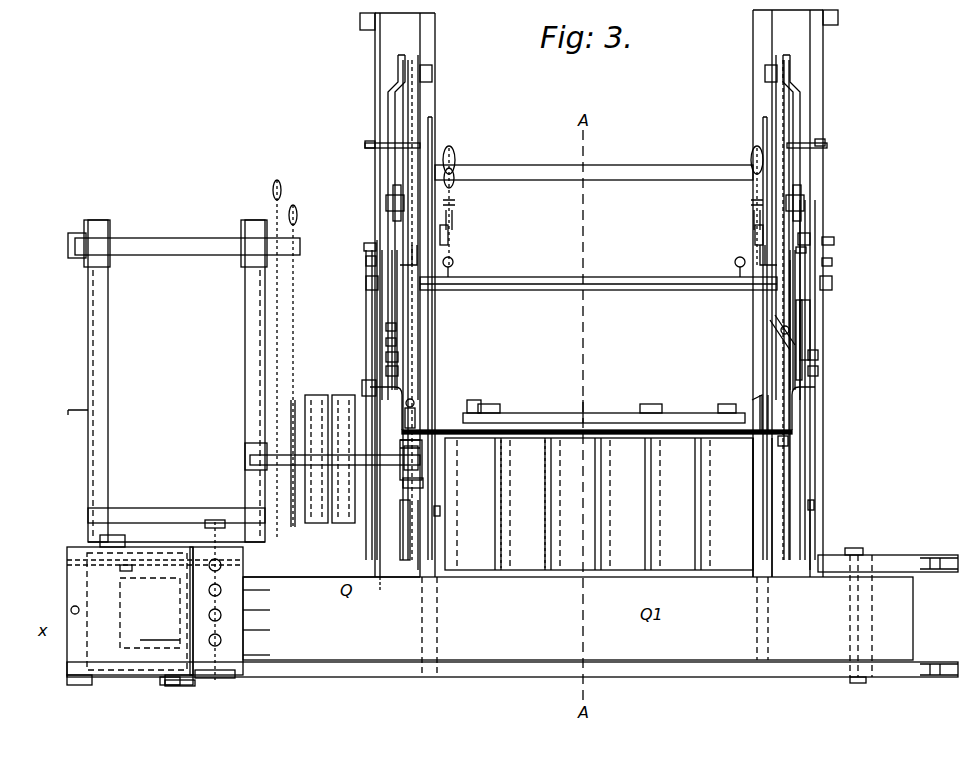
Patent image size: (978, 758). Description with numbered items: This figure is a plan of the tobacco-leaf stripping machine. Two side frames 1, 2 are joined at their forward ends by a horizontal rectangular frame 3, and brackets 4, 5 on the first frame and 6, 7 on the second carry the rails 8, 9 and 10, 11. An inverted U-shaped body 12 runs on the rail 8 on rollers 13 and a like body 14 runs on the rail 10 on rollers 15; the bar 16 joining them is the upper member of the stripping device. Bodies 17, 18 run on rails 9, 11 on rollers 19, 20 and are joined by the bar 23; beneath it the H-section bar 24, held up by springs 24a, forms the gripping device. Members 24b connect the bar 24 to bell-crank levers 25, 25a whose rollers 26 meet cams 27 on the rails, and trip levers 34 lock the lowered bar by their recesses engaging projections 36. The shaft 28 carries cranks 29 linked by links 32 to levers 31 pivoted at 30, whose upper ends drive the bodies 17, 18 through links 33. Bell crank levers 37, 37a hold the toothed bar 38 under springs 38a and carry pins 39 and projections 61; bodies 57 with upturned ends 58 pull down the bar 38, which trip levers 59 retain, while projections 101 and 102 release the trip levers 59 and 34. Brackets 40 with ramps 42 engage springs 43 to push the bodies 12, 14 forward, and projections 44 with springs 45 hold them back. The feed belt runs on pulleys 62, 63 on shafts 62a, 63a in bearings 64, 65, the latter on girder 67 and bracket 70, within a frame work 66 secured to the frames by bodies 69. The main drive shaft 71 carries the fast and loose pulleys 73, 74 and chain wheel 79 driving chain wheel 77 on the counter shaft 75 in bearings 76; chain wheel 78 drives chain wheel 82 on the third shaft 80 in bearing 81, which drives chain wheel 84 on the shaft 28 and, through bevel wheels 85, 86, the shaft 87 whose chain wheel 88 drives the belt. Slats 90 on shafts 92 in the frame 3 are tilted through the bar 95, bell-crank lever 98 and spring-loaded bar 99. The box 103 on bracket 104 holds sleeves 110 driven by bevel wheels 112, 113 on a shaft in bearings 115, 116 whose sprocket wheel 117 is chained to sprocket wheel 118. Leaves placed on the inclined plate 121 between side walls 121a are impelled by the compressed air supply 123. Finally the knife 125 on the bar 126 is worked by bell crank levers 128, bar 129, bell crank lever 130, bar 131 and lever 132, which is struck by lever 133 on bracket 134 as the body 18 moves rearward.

The frame 1 is at (436, 40).
The frame 2 is at (770, 46).
The rectangular frame 3 is at (760, 550).
The bracket 4 is at (370, 578).
The bracket 5 is at (360, 22).
The bracket 6 is at (818, 560).
The bracket 7 is at (838, 22).
The rail 8 is at (374, 50).
The rail 9 is at (436, 18).
The rail 10 is at (812, 52).
The rail 11 is at (752, 23).
The body 12 is at (375, 342).
The rollers 13 is at (366, 296).
The body 14 is at (818, 335).
The rollers 15 is at (808, 290).
The bar 16 is at (400, 420).
The body 17 is at (414, 100).
The body 18 is at (780, 100).
The rollers 19 is at (433, 75).
The rollers 20 is at (764, 72).
The bar 23 is at (628, 286).
The bar 24 is at (532, 286).
The springs 24a is at (454, 260).
The members 24b is at (448, 238).
The bell-crank lever 25 is at (452, 195).
The bell-crank lever 25a is at (755, 160).
The rollers 26 is at (453, 158).
The cams 27 is at (434, 119).
The shaft 28 is at (626, 170).
The crank 29 is at (400, 189).
The pivot 30 is at (384, 209).
The lever 31 is at (392, 218).
The links 32 is at (380, 172).
The links 33 is at (396, 82).
The trip levers 34 is at (450, 203).
The projections 36 is at (450, 220).
The bell crank lever 37 is at (380, 356).
The bell crank lever 37a is at (820, 357).
The toothed bar 38 is at (766, 434).
The springs 38a is at (416, 416).
The pin 39 is at (396, 330).
The brackets 40 is at (366, 146).
The ramps 42 is at (368, 141).
The springs 43 is at (366, 282).
The projections 44 is at (364, 249).
The springs 45 is at (366, 265).
The bodies 57 is at (398, 300).
The upturned ends 58 is at (396, 347).
The trip levers 59 is at (398, 364).
The projections 61 is at (398, 376).
The pulley 62 is at (150, 676).
The shaft 62a is at (156, 630).
The pulley 63 is at (920, 672).
The shaft 63a is at (868, 682).
The bearings 64 is at (112, 535).
The bearings 65 is at (870, 560).
The frame work 66 is at (244, 298).
The girder 67 is at (480, 672).
The bodies 69 is at (440, 598).
The bracket 70 is at (936, 556).
The main drive shaft 71 is at (400, 450).
The fast pulley 73 is at (316, 471).
The loose pulley 74 is at (343, 471).
The counter shaft 75 is at (150, 240).
The bearings 76 is at (100, 236).
The chain wheel 77 is at (281, 186).
The chain wheel 78 is at (297, 214).
The chain wheel 79 is at (282, 466).
The third shaft 80 is at (420, 460).
The bearing 81 is at (245, 464).
The chain wheel 82 is at (292, 527).
The chain wheel 84 is at (455, 168).
The bevel wheel 85 is at (424, 445).
The bevel wheel 86 is at (424, 484).
The shaft 87 is at (411, 530).
The chain wheel 88 is at (402, 578).
The slats 90 is at (595, 504).
The shafts 92 is at (599, 504).
The bar 95 is at (523, 504).
The bell-crank lever 98 is at (482, 408).
The bar 99 is at (414, 400).
The projections 101 is at (808, 537).
The projections 102 is at (441, 516).
The box 103 is at (250, 657).
The bracket 104 is at (244, 560).
The sleeves 110 is at (250, 613).
The bevel wheel 112 is at (250, 594).
The bevel wheel 113 is at (250, 633).
The bearing 115 is at (214, 520).
The bearing 116 is at (218, 682).
The sprocket wheel 117 is at (236, 680).
The sprocket wheel 118 is at (184, 688).
The inclined plate 121 is at (88, 576).
The side walls 121a is at (72, 546).
The compressed air supply 123 is at (150, 613).
The knife 125 is at (584, 410).
The bar 126 is at (540, 414).
The bell crank levers 128 is at (492, 404).
The bar 129 is at (716, 408).
The bell crank lever 130 is at (784, 446).
The bar 131 is at (804, 342).
The lever 132 is at (812, 315).
The lever 133 is at (812, 239).
The bracket 134 is at (808, 252).